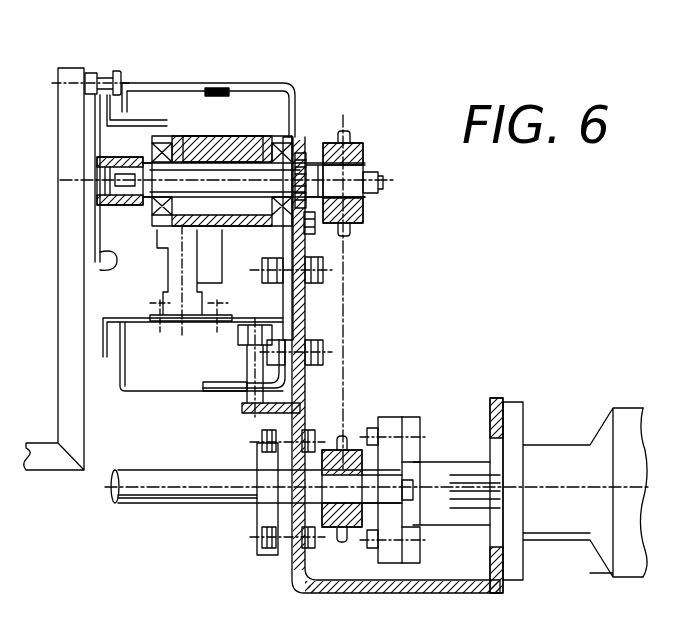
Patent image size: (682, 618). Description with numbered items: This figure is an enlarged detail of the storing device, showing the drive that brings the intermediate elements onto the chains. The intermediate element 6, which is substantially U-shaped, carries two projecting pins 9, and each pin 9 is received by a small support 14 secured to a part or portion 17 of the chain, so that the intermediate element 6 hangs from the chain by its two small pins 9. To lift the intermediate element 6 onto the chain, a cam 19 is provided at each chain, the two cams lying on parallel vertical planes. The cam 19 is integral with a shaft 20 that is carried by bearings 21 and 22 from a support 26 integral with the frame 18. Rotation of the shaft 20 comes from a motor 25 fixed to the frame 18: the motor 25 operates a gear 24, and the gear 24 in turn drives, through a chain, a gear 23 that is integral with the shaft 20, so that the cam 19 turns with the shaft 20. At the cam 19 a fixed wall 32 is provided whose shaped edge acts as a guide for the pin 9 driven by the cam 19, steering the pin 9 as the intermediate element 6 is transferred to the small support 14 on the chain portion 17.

The intermediate element 6 is at (56, 374).
The projecting pin 9 is at (107, 77).
The small support 14 is at (110, 107).
The chain portion 17 is at (140, 313).
The frame 18 is at (300, 302).
The cam 19 is at (97, 230).
The shaft 20 is at (245, 173).
The bearing 21 is at (297, 155).
The bearing 22 is at (161, 152).
The gear 23 is at (355, 214).
The gear 24 is at (351, 460).
The motor 25 is at (630, 420).
The support 26 is at (238, 143).
The fixed wall 32 is at (102, 268).